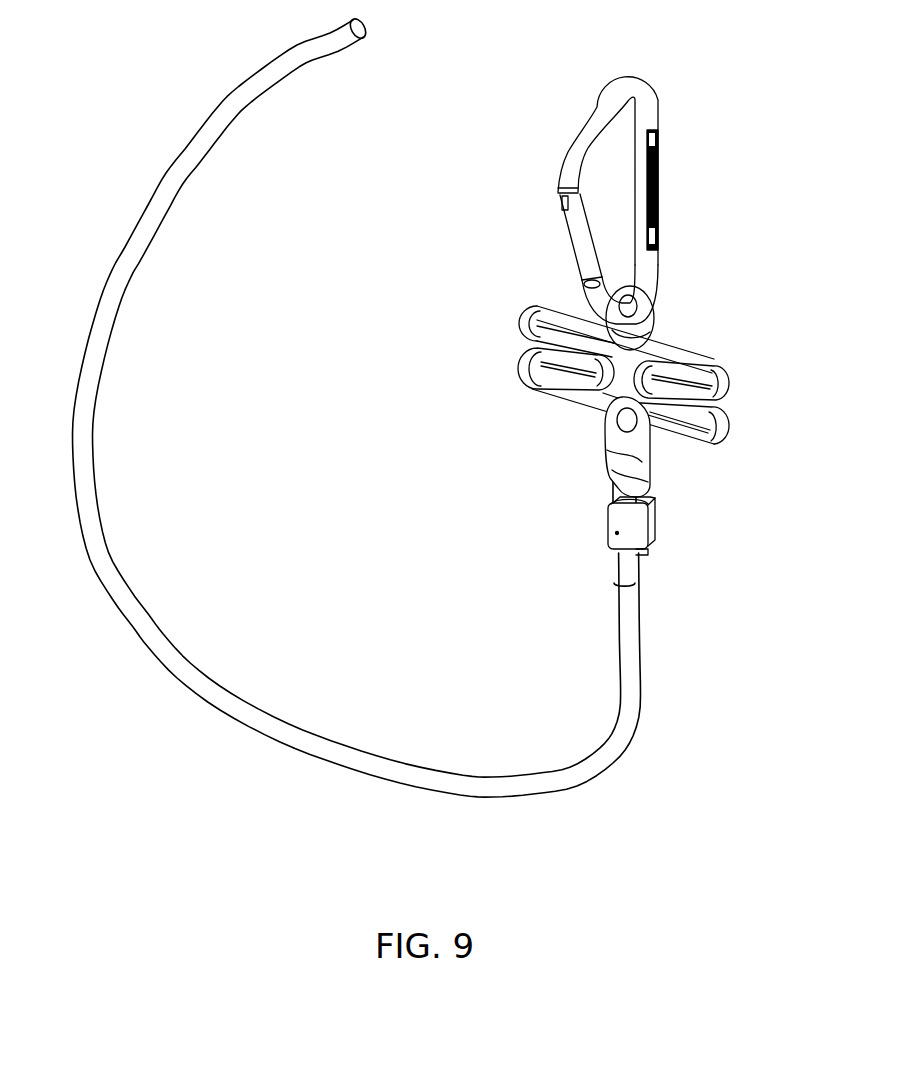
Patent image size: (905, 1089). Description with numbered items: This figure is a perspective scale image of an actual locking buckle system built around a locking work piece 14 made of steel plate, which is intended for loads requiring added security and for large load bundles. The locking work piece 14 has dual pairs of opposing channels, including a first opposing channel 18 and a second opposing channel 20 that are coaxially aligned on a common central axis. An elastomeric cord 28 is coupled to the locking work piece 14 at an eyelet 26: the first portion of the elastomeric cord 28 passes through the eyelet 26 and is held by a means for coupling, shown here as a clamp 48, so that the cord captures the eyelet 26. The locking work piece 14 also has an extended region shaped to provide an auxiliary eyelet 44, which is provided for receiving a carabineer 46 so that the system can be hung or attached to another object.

The locking work piece 14 is at (684, 323).
The first opposing channel 18 is at (736, 415).
The second opposing channel 20 is at (510, 342).
The eyelet 26 is at (605, 427).
The elastomeric cord 28 is at (136, 302).
The auxiliary eyelet 44 is at (633, 323).
The carabiner 46 is at (580, 93).
The clamp 48 is at (617, 533).